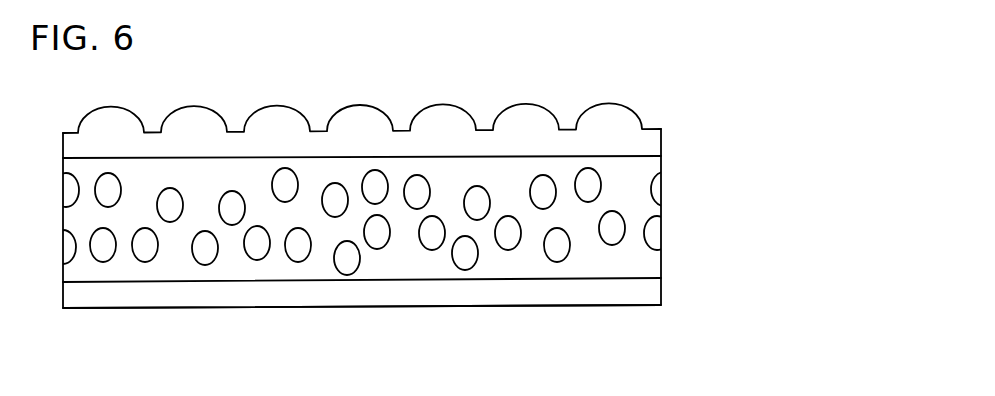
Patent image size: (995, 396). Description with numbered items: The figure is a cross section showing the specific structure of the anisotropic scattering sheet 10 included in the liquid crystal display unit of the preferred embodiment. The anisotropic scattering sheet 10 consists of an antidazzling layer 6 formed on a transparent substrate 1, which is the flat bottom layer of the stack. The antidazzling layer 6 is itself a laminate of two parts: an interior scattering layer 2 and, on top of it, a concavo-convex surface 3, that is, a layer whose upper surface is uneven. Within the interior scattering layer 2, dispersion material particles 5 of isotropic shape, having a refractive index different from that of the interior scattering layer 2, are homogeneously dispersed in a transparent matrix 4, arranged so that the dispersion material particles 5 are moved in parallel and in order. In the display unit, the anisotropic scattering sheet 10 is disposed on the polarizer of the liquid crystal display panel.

The transparent substrate 1 is at (643, 293).
The interior scattering layer 2 is at (712, 143).
The concavo-convex surface 3 is at (625, 132).
The transparent matrix 4 is at (640, 265).
The dispersion material particles 5 is at (610, 218).
The antidazzling layer 6 is at (750, 70).
The anisotropic scattering sheet 10 is at (793, 122).